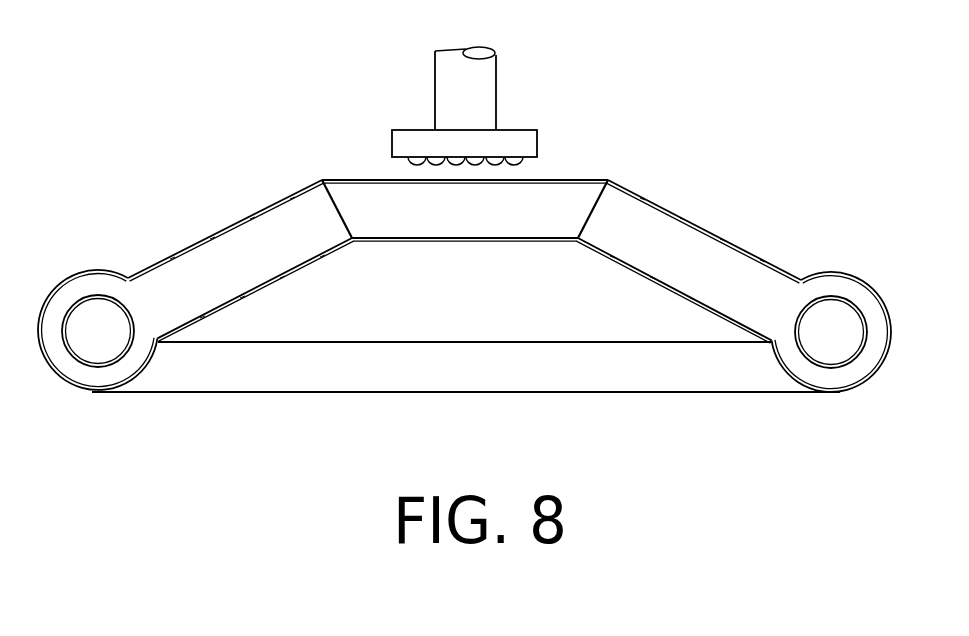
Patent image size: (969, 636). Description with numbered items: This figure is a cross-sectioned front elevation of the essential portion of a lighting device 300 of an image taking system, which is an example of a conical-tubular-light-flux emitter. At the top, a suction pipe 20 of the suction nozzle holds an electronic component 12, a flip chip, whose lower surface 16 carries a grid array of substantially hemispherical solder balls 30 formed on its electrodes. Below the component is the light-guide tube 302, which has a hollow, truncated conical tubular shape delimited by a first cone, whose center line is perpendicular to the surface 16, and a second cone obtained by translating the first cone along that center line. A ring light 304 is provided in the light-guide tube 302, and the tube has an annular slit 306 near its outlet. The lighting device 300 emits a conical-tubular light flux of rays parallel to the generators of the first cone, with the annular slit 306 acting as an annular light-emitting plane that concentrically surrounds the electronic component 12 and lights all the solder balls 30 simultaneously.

The electronic component 12 is at (515, 143).
The surface 16 is at (530, 167).
The suction pipe 20 is at (482, 79).
The solder balls 30 is at (408, 160).
The lighting device 300 is at (464, 304).
The light-guide tube 302 is at (205, 240).
The ring light 304 is at (97, 364).
The annular slit 306 is at (597, 210).